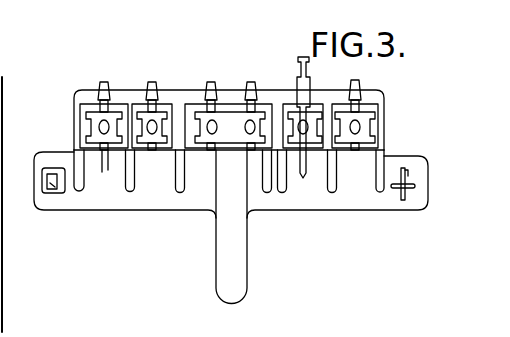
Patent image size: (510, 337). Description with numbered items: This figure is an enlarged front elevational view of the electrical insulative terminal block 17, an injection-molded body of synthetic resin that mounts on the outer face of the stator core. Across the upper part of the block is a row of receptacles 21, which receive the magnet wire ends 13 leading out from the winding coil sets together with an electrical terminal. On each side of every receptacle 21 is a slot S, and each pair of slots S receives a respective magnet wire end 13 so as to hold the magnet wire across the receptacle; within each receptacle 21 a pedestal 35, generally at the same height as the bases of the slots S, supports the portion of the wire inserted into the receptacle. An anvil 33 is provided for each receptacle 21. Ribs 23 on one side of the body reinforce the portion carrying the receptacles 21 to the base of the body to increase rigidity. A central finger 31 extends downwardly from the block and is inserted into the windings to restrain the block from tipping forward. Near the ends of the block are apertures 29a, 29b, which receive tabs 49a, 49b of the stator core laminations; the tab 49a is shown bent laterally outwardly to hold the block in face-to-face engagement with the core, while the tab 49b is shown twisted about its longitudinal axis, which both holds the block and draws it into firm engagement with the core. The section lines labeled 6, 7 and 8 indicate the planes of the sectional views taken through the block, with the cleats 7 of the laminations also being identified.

The section line 6- 6 is at (157, 23).
The cleats 7 is at (240, 182).
The section line 8- 8 is at (112, 175).
The magnet wire ends 13 is at (308, 166).
The electrical insulative terminal block 17 is at (184, 72).
The receptacles 21 is at (88, 135).
The ribs 23 is at (377, 187).
The aperture 29a is at (57, 192).
The aperture 29b is at (401, 183).
The central finger 31 is at (247, 288).
The anvils 33 is at (358, 85).
The pedestal 35 is at (371, 131).
The tab 49a is at (47, 193).
The tab 49b is at (412, 174).
The slots S is at (101, 100).